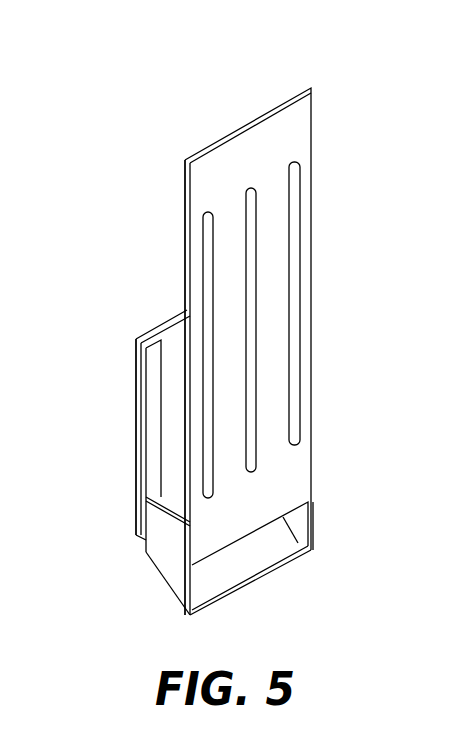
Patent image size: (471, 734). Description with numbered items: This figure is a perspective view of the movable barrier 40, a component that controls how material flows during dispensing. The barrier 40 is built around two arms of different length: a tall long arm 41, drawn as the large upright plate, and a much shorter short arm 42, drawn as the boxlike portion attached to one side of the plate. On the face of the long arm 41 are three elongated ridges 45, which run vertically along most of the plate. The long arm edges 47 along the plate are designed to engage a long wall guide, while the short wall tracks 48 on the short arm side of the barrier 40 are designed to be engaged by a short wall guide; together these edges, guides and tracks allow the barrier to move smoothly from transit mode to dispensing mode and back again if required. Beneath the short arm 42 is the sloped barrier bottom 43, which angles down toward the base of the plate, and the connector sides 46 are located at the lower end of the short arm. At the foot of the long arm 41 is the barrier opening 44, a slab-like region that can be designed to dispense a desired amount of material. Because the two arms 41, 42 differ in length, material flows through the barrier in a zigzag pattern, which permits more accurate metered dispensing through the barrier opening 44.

The barrier 40 is at (192, 48).
The long arm 41 is at (297, 123).
The short arm 42 is at (172, 363).
The sloped barrier bottom 43 is at (170, 590).
The barrier opening 44 is at (278, 541).
The ridges 45 is at (212, 270).
The connector sides 46 is at (160, 547).
The long arm edges 47 is at (187, 230).
The short wall tracks 48 is at (137, 442).